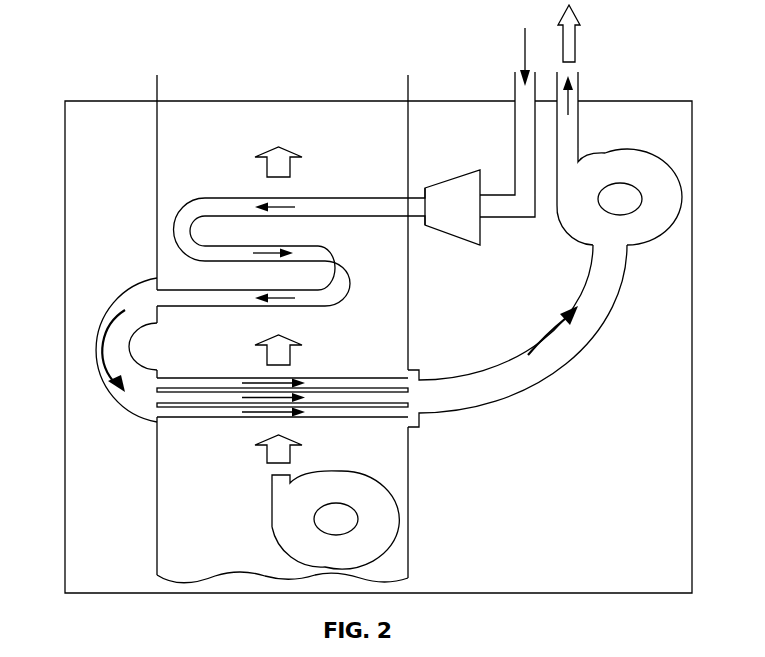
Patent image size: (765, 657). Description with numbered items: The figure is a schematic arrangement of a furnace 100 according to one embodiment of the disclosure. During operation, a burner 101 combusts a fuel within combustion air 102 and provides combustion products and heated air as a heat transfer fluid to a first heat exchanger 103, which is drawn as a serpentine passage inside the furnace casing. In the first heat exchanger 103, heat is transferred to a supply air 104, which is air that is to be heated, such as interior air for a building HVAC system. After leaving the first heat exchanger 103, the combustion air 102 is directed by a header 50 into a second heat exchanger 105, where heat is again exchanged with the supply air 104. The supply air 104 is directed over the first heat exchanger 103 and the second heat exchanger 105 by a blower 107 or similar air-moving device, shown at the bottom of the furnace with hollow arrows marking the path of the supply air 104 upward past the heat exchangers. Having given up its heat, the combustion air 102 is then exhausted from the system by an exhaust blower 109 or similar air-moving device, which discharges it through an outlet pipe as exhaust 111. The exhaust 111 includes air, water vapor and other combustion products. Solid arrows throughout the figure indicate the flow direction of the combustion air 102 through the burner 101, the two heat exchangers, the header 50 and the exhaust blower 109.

The furnace 100 is at (91, 57).
The burner 101 is at (475, 217).
The combustion air 102 is at (278, 211).
The first heat exchanger 103 is at (203, 204).
The supply air 104 is at (283, 170).
The second heat exchanger 105 is at (408, 371).
The blower 107 is at (388, 522).
The exhaust blower 109 is at (620, 190).
The exhaust 111 is at (577, 42).
The header 50 is at (148, 429).